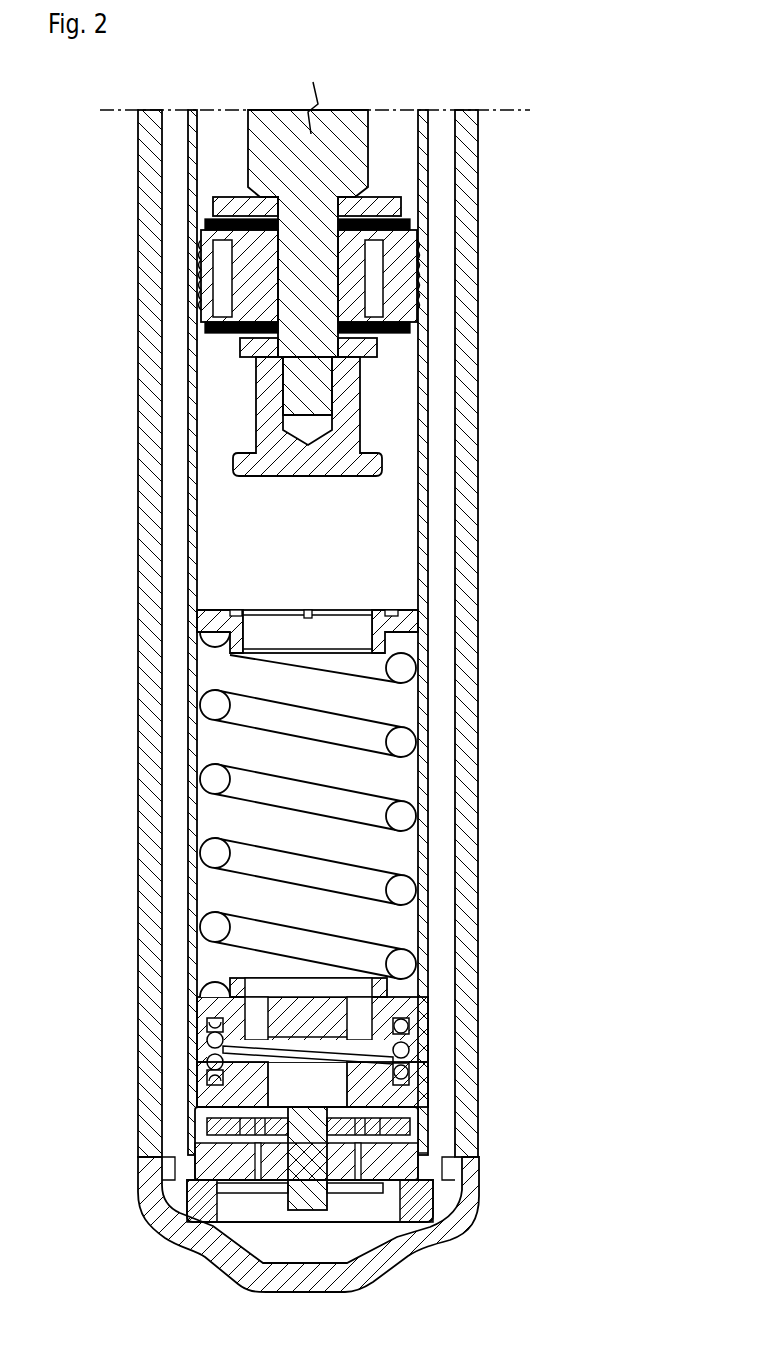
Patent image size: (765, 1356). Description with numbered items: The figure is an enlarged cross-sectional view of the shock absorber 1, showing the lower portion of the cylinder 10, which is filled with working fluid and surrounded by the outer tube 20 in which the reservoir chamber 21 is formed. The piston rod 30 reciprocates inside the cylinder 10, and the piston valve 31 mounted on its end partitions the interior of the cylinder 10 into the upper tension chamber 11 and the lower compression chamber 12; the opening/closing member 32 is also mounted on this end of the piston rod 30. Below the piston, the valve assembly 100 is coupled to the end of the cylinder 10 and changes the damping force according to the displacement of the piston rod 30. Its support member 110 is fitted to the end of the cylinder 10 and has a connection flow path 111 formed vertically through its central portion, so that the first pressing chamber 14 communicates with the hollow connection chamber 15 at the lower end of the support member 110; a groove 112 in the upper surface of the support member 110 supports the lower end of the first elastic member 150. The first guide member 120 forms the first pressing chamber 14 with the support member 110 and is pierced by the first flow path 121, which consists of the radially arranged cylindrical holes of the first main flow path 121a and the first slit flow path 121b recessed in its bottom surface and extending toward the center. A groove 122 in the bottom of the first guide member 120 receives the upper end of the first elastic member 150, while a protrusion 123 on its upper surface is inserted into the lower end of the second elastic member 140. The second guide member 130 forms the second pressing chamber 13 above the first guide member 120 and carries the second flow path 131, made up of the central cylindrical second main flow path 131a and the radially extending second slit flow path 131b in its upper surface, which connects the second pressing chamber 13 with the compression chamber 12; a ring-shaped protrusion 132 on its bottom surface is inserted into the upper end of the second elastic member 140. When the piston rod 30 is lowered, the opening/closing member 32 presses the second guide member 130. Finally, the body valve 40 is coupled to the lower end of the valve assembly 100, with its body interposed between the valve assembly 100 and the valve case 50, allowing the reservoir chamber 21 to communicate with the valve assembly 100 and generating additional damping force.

The shock absorber 1 is at (615, 220).
The cylinder 10 is at (192, 207).
The tension chamber 11 is at (213, 138).
The compression chamber 12 is at (213, 378).
The second pressing chamber 13 is at (213, 665).
The first pressing chamber 14 is at (202, 1060).
The connection chamber 15 is at (203, 1118).
The outer tube 20 is at (467, 272).
The reservoir chamber 21 is at (444, 351).
The piston rod 30 is at (365, 150).
The piston valve 31 is at (243, 283).
The opening/closing member 32 is at (348, 438).
The body valve 40 is at (257, 1165).
The valve case 50 is at (205, 1245).
The valve assembly 100 is at (604, 785).
The support member 110 is at (315, 1115).
The connection flow path 111 is at (217, 1105).
The groove 112 is at (408, 1097).
The first guide member 120 is at (350, 1012).
The first flow path 121 is at (426, 1056).
The first main flow path 121a is at (395, 1038).
The first slit flow path 121b is at (400, 1068).
The groove 122 is at (217, 1022).
The protrusion 123 is at (210, 993).
The second guide member 130 is at (350, 622).
The second flow path 131 is at (501, 607).
The second main flow path 131a is at (412, 626).
The second slit flow path 131b is at (383, 614).
The protrusion 132 is at (225, 635).
The second elastic member 140 is at (407, 668).
The first elastic member 150 is at (213, 1067).